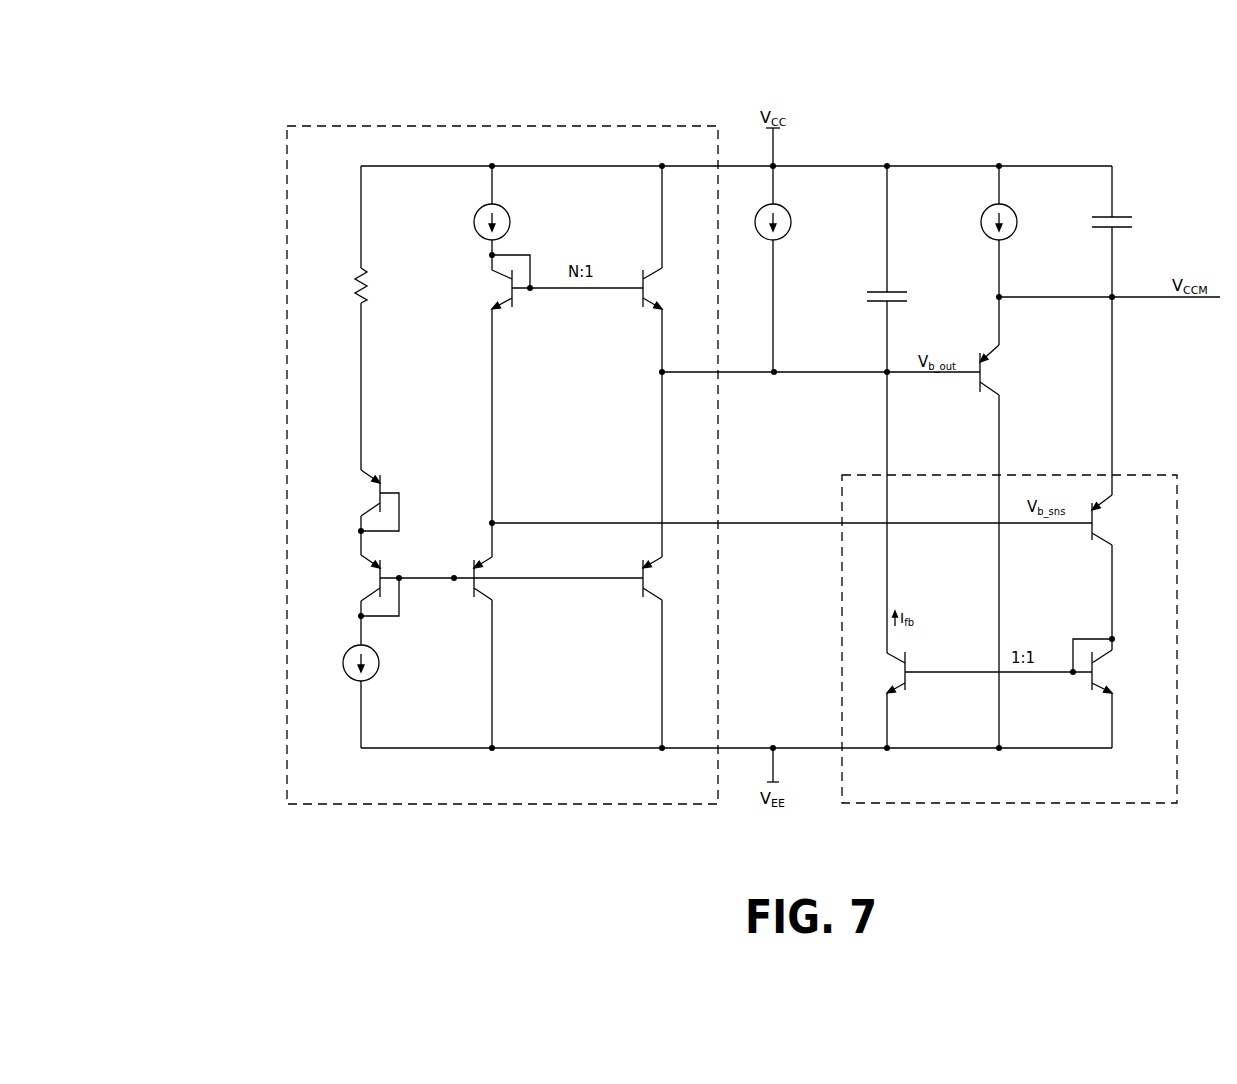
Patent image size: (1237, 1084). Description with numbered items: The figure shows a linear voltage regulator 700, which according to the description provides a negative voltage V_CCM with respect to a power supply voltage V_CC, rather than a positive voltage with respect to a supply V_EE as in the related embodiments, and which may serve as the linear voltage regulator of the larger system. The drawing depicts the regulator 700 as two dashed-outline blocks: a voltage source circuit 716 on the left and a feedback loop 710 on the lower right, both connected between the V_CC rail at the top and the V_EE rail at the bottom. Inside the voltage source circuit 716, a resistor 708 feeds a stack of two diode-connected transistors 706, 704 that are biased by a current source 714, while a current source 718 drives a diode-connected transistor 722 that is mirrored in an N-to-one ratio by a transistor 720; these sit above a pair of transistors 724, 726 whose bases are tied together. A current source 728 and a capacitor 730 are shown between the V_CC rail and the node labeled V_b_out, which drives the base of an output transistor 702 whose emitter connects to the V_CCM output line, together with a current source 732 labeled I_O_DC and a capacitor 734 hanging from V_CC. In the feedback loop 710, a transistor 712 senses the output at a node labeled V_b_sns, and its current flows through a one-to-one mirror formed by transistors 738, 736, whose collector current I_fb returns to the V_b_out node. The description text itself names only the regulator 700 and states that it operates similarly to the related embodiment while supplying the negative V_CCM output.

The linear voltage regulator 700 is at (233, 97).
The output transistor 702 is at (980, 392).
The diode-connected transistor 704 is at (363, 597).
The diode-connected transistor 706 is at (363, 512).
The resistor 708 is at (365, 303).
The feedback loop 710 is at (1177, 613).
The sense transistor 712 is at (1092, 540).
The current source 714 is at (378, 668).
The voltage source circuit 716 is at (641, 805).
The current source 718 is at (510, 226).
The transistor 720 is at (643, 268).
The transistor 722 is at (512, 305).
The transistor 724 is at (494, 602).
The transistor 726 is at (643, 597).
The current source 728 is at (791, 228).
The capacitor 730 is at (870, 301).
The DC output current source 732 is at (985, 212).
The capacitor 734 is at (1128, 228).
The current mirror transistor 736 is at (906, 692).
The current mirror transistor 738 is at (1092, 690).